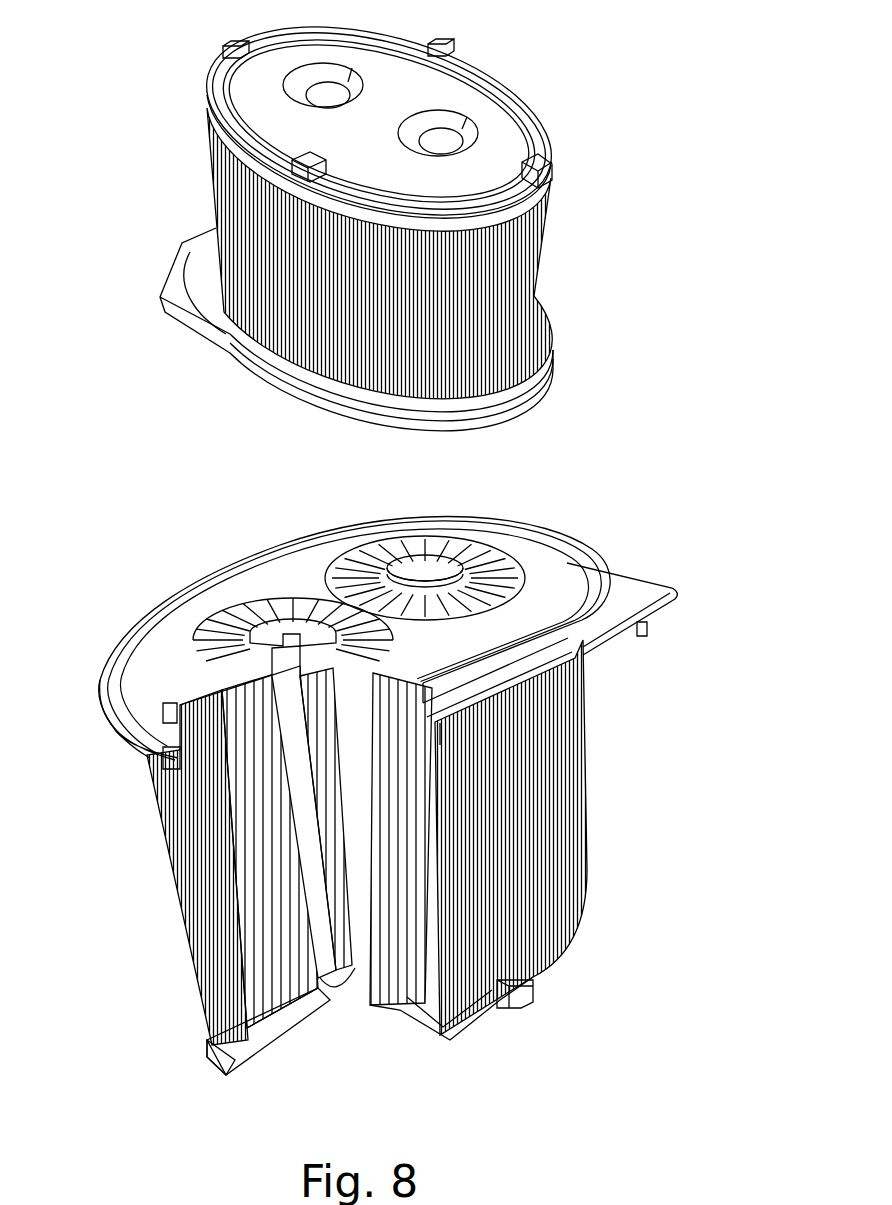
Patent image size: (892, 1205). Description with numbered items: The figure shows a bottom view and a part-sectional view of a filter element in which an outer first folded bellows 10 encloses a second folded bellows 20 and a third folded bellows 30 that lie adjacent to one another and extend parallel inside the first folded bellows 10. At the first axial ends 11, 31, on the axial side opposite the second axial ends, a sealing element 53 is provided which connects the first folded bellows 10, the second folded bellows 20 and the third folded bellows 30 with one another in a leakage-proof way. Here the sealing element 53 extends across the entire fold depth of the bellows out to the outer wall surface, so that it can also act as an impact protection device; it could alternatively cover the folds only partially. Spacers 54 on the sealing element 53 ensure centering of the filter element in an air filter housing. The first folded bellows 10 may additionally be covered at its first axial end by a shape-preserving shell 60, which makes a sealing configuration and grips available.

The first folded bellows 10 is at (240, 888).
The first axial end of the first folded bellows 11 is at (210, 1043).
The second folded bellows 20 is at (513, 553).
The third folded bellows 30 is at (190, 647).
The first axial end of the third folded bellows 31 is at (300, 992).
The sealing element 53 is at (512, 121).
The spacers 54 is at (553, 178).
The shape-preserving shell 60 is at (211, 322).